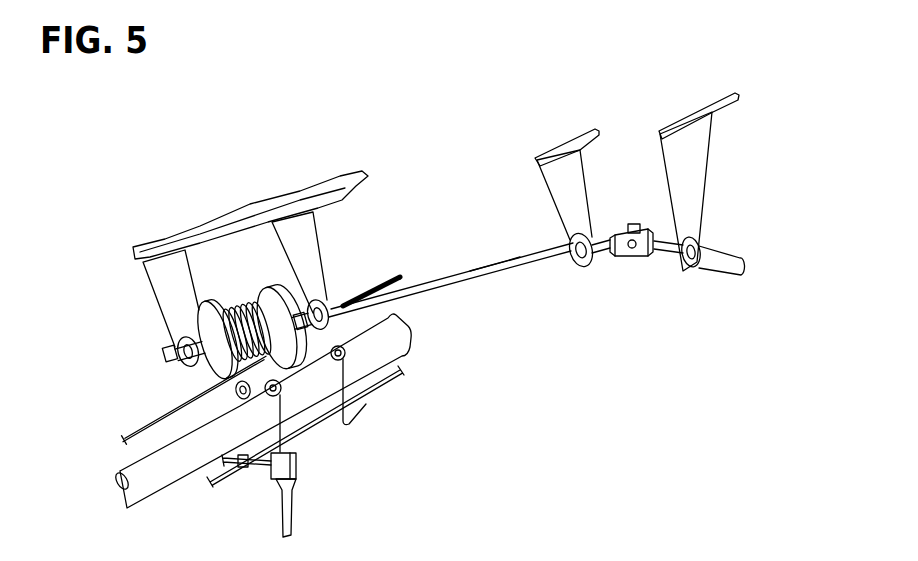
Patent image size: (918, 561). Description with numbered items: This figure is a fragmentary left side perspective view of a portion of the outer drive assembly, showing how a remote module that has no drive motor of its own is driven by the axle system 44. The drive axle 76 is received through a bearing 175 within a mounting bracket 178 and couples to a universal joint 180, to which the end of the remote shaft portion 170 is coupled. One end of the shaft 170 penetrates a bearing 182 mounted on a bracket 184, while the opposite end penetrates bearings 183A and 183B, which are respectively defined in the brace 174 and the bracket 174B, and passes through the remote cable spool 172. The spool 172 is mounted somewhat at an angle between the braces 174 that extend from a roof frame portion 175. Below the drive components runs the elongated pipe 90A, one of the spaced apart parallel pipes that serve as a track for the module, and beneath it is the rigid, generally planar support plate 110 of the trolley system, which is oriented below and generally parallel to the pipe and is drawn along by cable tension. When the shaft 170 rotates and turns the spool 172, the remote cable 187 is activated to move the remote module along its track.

The roof frame portion 175 is at (228, 210).
The brace 174 is at (307, 260).
The bracket 174B is at (167, 285).
The remote cable spool 172 is at (222, 312).
The bearing 183A is at (307, 297).
The bearing 183B is at (167, 340).
The remote cable 187 is at (393, 272).
The remote shaft portion 170 is at (475, 280).
The axle system 44 is at (509, 252).
The bearing 182 is at (595, 268).
The bracket 184 is at (565, 177).
The universal joint 180 is at (627, 223).
The mounting bracket 178 is at (690, 185).
The drive axle 76 is at (733, 262).
The pipe 90A is at (167, 473).
The support plate 110 is at (322, 428).